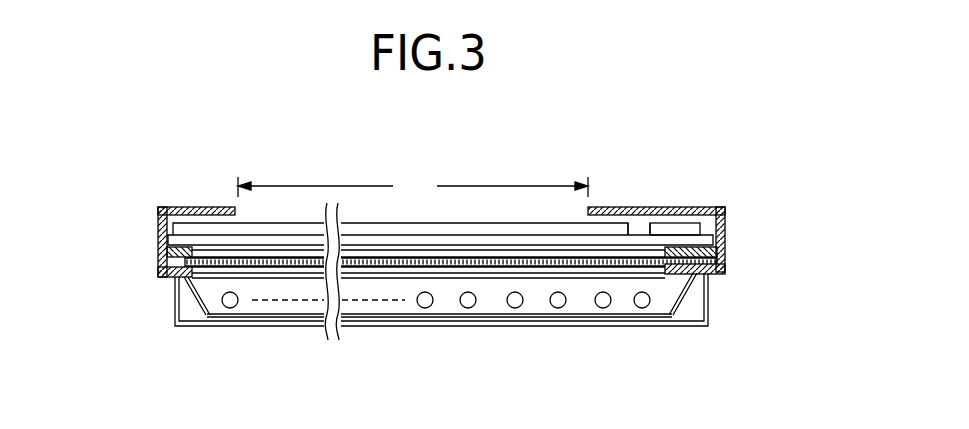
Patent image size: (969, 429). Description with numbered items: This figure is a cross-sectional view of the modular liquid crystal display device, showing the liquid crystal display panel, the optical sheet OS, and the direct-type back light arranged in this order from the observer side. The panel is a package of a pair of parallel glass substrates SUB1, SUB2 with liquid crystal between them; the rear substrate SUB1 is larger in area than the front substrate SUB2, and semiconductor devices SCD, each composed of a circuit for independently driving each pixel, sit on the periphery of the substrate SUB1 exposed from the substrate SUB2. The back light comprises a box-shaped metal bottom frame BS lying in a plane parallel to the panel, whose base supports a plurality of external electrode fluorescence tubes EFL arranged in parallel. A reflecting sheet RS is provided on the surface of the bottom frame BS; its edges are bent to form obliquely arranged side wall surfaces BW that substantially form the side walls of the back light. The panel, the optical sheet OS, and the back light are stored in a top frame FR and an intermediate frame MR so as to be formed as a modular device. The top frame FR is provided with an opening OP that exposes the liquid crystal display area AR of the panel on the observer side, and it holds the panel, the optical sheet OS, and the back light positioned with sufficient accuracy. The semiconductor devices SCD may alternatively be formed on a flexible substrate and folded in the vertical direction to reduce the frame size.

The substrate SUB2 is at (198, 232).
The substrate SUB1 is at (203, 243).
The opening OP is at (587, 206).
The semiconductor device SCD is at (675, 228).
The top frame FR is at (725, 230).
The intermediate frame MR is at (718, 270).
The liquid crystal display area AR is at (413, 187).
The side wall surface BW is at (200, 302).
The optical sheet OS is at (288, 263).
The reflecting sheet RS is at (347, 313).
The external electrode fluorescence tube EFL is at (468, 302).
The bottom frame BS is at (627, 323).